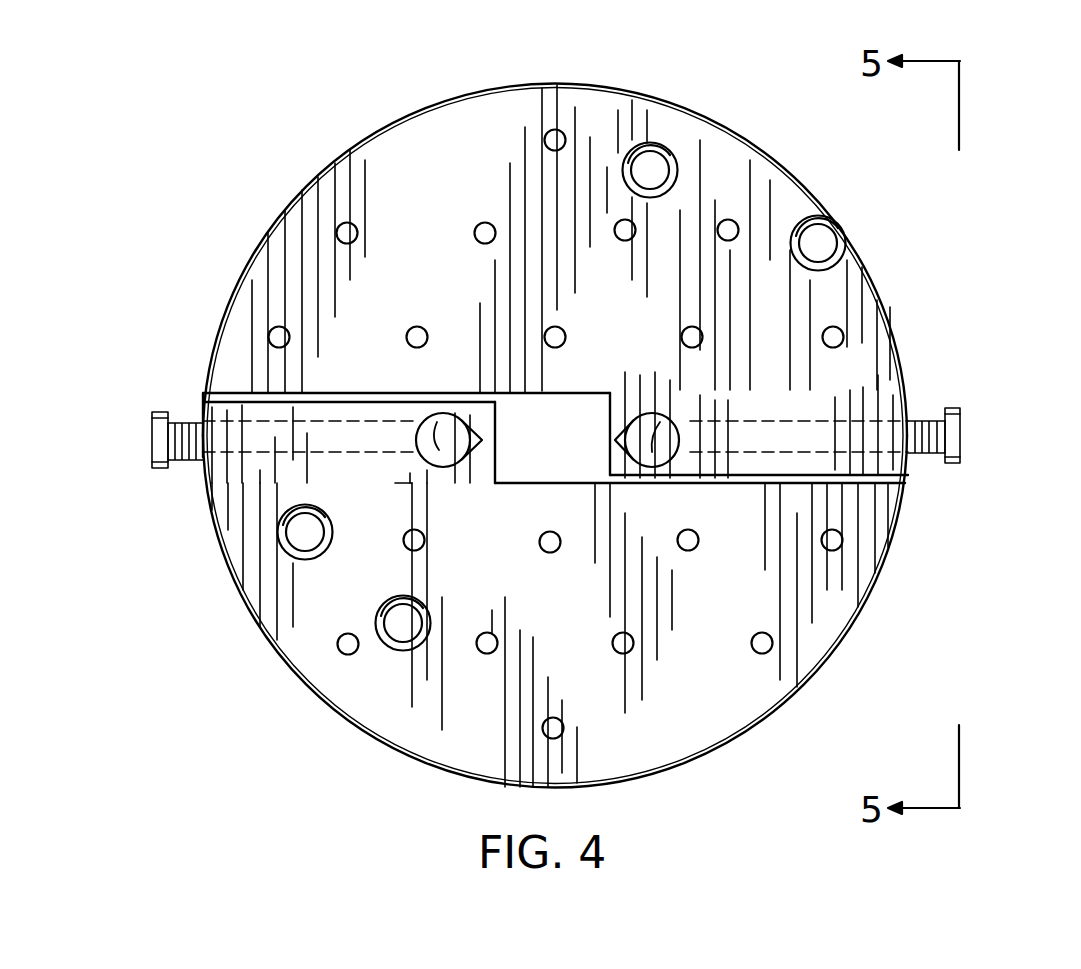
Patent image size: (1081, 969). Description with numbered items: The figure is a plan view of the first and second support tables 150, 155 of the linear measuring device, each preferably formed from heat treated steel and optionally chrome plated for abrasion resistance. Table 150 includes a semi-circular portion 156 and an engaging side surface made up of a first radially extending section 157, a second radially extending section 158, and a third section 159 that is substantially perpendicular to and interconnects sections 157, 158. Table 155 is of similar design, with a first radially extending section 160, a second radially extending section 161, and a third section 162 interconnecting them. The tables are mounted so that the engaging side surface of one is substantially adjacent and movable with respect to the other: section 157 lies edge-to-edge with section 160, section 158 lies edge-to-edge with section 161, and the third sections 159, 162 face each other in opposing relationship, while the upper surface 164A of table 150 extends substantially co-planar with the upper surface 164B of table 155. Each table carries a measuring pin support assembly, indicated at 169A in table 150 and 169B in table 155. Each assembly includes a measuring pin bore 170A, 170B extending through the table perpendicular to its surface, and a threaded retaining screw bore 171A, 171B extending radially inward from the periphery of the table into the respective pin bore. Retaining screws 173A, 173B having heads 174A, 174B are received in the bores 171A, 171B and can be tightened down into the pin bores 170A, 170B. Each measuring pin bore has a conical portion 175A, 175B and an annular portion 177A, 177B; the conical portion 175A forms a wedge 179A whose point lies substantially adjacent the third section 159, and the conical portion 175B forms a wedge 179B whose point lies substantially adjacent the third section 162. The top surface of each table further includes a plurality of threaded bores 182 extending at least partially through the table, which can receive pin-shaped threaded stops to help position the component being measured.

The first support table 150 is at (774, 173).
The second support table 155 is at (310, 638).
The semi-circular portion 156 is at (326, 166).
The first radially extending section 157 is at (408, 393).
The second radially extending section 158 is at (740, 455).
The third section 159 is at (612, 458).
The first radially extending section 160 is at (395, 410).
The second radially extending section 161 is at (790, 480).
The third section 162 is at (503, 478).
The upper surface 164A is at (291, 246).
The upper surface 164B is at (687, 715).
The measuring pin support assembly 169A is at (917, 400).
The measuring pin support assembly 169B is at (192, 470).
The measuring pin bore 170A is at (662, 430).
The measuring pin bore 170B is at (437, 423).
The threaded retaining screw bore 171A is at (793, 422).
The threaded retaining screw bore 171B is at (298, 455).
The retaining screw 173A is at (918, 455).
The retaining screw 173B is at (188, 422).
The head 174A is at (961, 432).
The head 174B is at (153, 450).
The conical portion 175A is at (640, 392).
The conical portion 175B is at (478, 472).
The annular portion 177A is at (672, 482).
The annular portion 177B is at (402, 480).
The wedge 179A is at (616, 440).
The wedge 179B is at (462, 398).
The threaded bores 182 is at (480, 242).